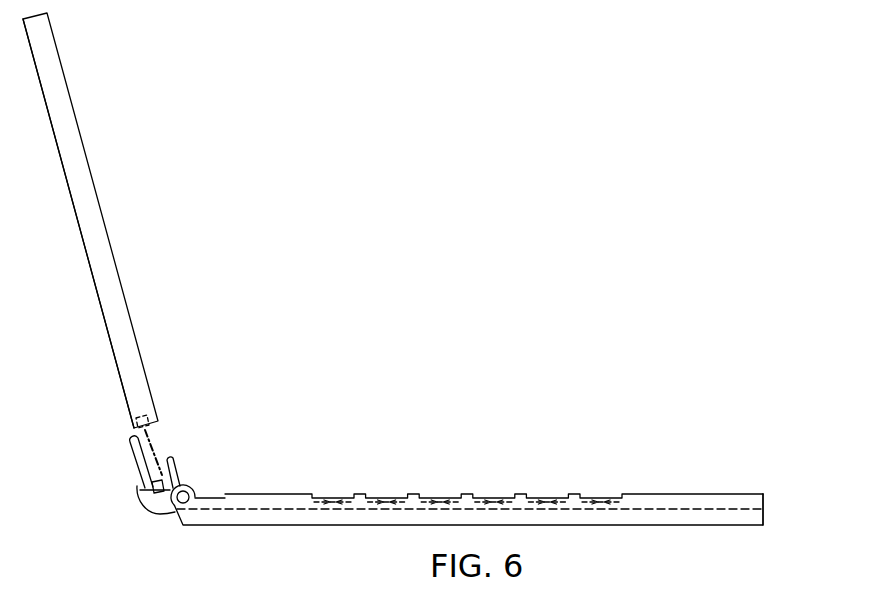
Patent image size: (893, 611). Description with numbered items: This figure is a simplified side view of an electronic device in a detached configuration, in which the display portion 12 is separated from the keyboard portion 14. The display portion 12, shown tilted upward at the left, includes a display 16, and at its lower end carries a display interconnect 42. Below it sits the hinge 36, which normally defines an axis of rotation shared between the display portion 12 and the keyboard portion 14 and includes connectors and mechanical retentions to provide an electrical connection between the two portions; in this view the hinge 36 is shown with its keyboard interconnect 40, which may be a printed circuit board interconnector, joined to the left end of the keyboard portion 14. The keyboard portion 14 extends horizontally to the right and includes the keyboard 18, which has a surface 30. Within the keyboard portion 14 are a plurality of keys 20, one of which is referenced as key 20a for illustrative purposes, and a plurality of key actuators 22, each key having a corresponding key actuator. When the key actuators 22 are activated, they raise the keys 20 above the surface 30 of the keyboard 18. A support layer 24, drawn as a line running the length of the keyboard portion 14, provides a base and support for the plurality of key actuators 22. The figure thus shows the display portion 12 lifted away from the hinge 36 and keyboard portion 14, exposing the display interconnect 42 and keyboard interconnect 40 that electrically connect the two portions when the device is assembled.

The display portion 12 is at (110, 194).
The keyboard portion 14 is at (664, 486).
The display 16 is at (66, 272).
The keyboard 18 is at (540, 432).
The plurality of keys 20 is at (631, 493).
The key 20a is at (310, 495).
The plurality of key actuators 22 is at (325, 527).
The support layer 24 is at (684, 510).
The surface 30 is at (727, 493).
The hinge 36 is at (137, 470).
The keyboard interconnect 40 is at (142, 491).
The display interconnect 42 is at (133, 426).